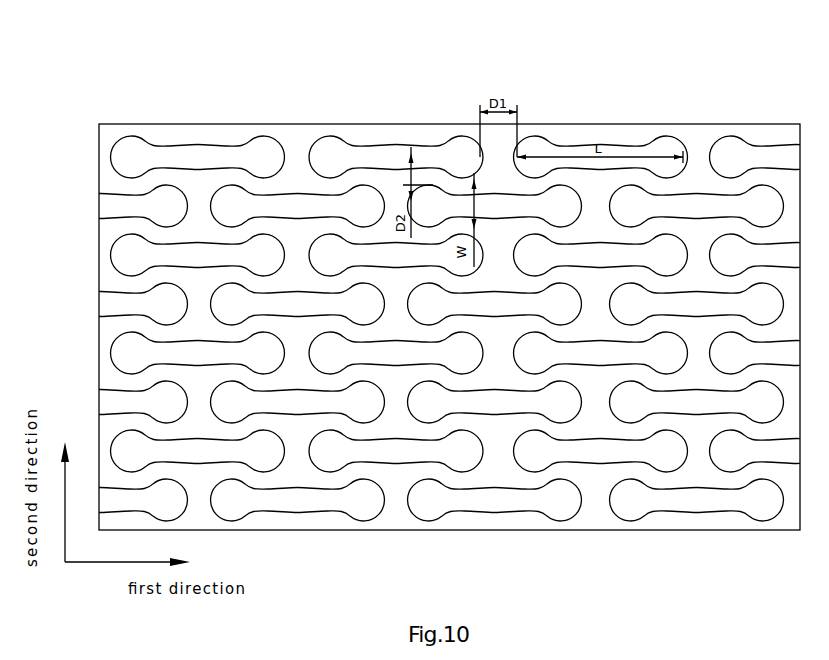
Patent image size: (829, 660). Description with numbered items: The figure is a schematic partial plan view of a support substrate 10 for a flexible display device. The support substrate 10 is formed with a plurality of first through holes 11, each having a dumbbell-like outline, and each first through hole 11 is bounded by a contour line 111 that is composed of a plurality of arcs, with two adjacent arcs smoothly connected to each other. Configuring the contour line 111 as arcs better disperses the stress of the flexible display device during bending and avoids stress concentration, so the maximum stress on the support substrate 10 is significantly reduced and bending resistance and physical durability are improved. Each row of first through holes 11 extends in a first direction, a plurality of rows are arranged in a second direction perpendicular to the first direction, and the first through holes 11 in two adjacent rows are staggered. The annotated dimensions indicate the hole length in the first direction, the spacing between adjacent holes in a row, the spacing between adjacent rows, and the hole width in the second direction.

The support substrate 10 is at (132, 62).
The first through hole 11 is at (385, 150).
The contour line 111 is at (265, 137).